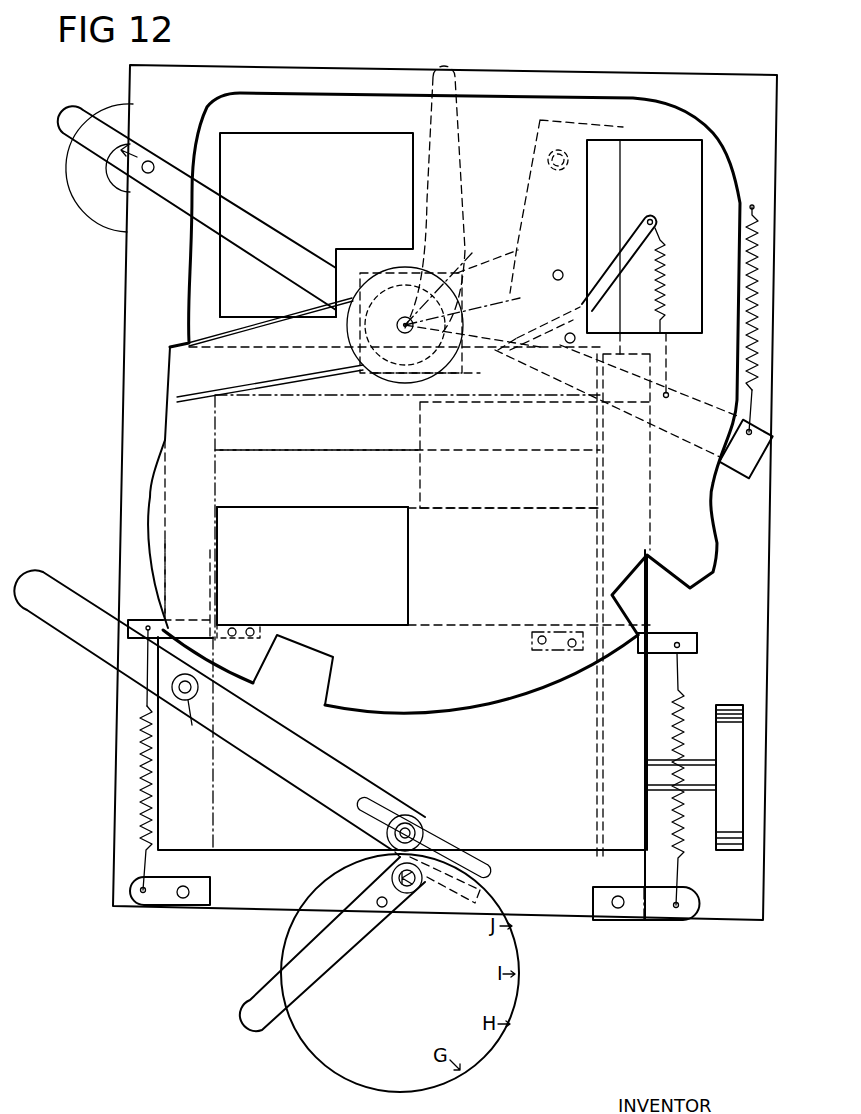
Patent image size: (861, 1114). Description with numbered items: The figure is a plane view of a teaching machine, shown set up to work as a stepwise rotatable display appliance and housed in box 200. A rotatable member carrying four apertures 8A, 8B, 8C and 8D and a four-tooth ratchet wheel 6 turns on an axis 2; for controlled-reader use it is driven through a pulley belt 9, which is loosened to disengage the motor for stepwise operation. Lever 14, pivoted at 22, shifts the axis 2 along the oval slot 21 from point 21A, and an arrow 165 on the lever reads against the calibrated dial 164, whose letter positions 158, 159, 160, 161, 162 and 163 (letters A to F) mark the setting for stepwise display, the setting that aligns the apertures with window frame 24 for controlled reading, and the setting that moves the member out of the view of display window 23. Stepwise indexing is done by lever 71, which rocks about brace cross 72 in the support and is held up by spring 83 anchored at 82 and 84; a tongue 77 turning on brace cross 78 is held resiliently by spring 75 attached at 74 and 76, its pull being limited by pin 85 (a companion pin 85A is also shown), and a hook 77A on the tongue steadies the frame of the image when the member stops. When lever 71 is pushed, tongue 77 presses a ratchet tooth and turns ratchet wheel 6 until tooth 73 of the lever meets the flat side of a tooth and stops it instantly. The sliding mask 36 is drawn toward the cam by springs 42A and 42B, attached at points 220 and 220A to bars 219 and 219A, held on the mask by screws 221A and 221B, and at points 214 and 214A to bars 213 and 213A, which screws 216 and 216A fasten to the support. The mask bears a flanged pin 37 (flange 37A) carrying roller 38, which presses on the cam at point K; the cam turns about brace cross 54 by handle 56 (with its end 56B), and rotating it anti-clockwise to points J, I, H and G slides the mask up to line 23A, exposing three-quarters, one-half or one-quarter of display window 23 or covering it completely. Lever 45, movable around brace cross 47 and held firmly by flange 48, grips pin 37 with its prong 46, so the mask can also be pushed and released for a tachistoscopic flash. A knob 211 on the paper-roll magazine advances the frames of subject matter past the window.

The axis 2 is at (397, 327).
The ratchet wheel 6 is at (423, 319).
The aperture 8A is at (410, 568).
The aperture 8B is at (625, 210).
The aperture 8C is at (345, 140).
The aperture 8D is at (235, 270).
The pulley belt 9 is at (275, 386).
The lever 14 is at (244, 212).
The oval slot 21 is at (432, 112).
The bar 21A is at (398, 347).
The pivot pin 22 is at (154, 163).
The display window 23 is at (385, 545).
The line 23A is at (586, 400).
The quarter picture frame 24 is at (598, 438).
The sliding mask 36 is at (205, 790).
The pin 37 is at (418, 830).
The pivot base 37A is at (395, 850).
The roller 38 is at (415, 822).
The spring 42A is at (686, 712).
The spring 42B is at (150, 750).
The lever 45 is at (68, 625).
The prong 46 is at (375, 800).
The brace cross 47 is at (190, 720).
The flange 48 is at (200, 700).
The brace cross 54 is at (414, 890).
The handle 56 is at (335, 965).
The pin 56B is at (382, 908).
The lever 71 is at (740, 478).
The brace cross 72 is at (566, 170).
The tooth 73 is at (462, 317).
The attachment point 74 is at (666, 398).
The spring 75 is at (664, 268).
The attachment point 76 is at (652, 222).
The tongue 77 is at (532, 352).
The hook 77A is at (495, 378).
The brace cross 78 is at (539, 316).
The attachment point 82 is at (756, 208).
The spring 83 is at (762, 350).
The attachment point 84 is at (755, 432).
The pin 85 is at (578, 340).
The pin 85A is at (551, 263).
The letter A mark 158 is at (126, 124).
The dial position A 159 is at (80, 146).
The dial position B 160 is at (80, 160).
The dial position C 161 is at (78, 185).
The letter E mark 162 is at (82, 200).
The letter F mark 163 is at (100, 222).
The calibrated dial 164 is at (122, 212).
The arrow 165 is at (140, 150).
The box 200 is at (165, 414).
The knob 211 is at (712, 840).
The bar 213 is at (594, 900).
The bar 213A is at (212, 889).
The attachment point 214 is at (680, 905).
The attachment point 214A is at (142, 895).
The screw 216 is at (618, 895).
The screw 216A is at (182, 900).
The bar 219 is at (690, 648).
The bar 219A is at (203, 614).
The attachment point 220 is at (676, 633).
The attachment point 220A is at (128, 640).
The screw 221A is at (543, 630).
The screw 221B is at (236, 626).